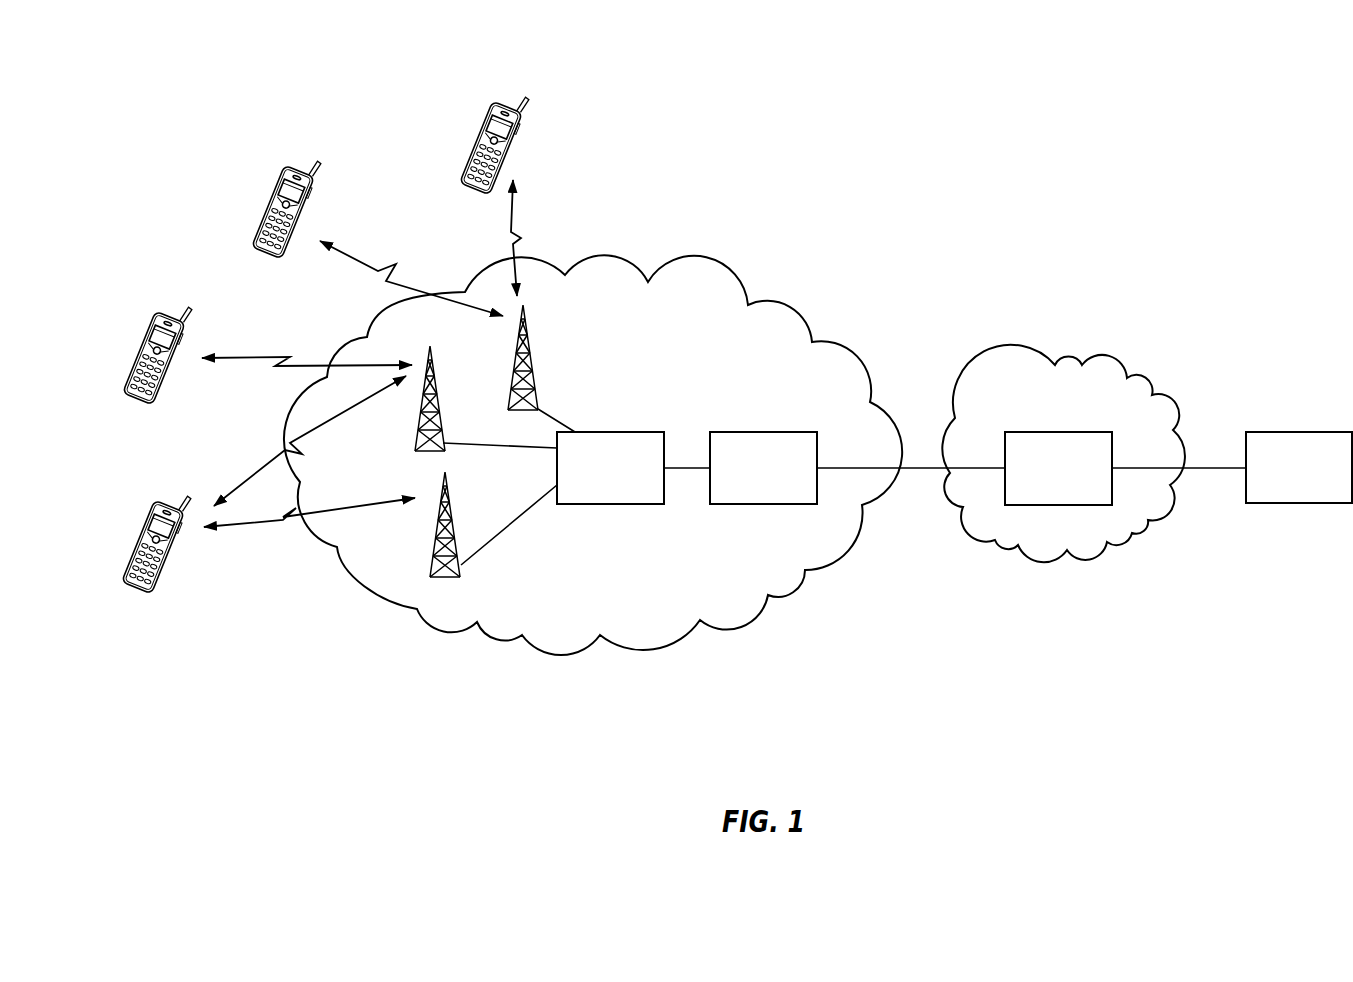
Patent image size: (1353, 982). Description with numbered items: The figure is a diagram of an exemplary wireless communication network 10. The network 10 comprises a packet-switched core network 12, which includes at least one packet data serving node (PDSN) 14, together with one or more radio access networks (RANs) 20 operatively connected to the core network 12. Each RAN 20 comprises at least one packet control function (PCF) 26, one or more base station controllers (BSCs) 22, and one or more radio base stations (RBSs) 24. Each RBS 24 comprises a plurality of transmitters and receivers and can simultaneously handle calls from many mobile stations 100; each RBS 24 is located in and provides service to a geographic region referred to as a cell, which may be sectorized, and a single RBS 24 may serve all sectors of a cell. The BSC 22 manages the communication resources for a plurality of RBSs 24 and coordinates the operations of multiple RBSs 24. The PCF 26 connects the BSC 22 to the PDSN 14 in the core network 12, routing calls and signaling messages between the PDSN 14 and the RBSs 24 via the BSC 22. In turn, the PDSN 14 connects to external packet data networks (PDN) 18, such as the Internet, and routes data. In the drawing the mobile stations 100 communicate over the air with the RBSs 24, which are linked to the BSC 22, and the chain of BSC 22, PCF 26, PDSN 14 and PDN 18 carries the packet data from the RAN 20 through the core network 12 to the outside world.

The network 10 is at (1178, 180).
The packet-switched core network 12 is at (1139, 381).
The packet data serving node 14 is at (1085, 432).
The packet data network 18 is at (1287, 492).
The radio access network 20 is at (784, 305).
The base station controller 22 is at (614, 432).
The radio base station 24 is at (440, 398).
The packet control function 26 is at (778, 432).
The mobile station 100 is at (476, 150).